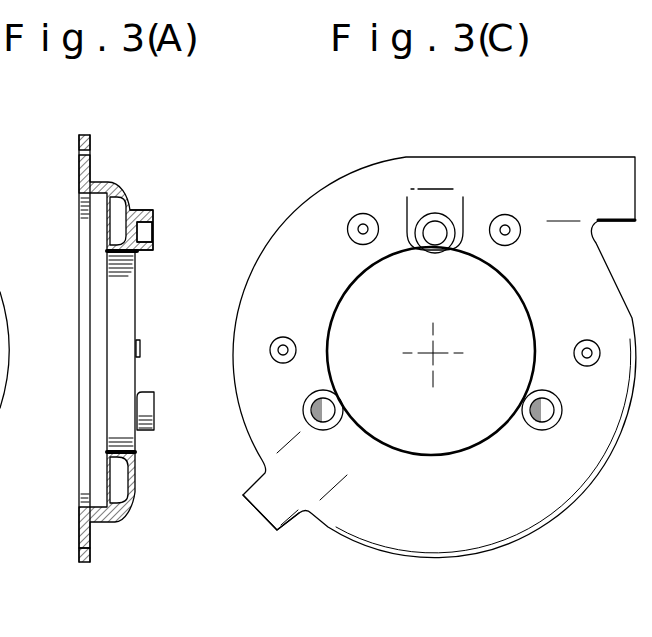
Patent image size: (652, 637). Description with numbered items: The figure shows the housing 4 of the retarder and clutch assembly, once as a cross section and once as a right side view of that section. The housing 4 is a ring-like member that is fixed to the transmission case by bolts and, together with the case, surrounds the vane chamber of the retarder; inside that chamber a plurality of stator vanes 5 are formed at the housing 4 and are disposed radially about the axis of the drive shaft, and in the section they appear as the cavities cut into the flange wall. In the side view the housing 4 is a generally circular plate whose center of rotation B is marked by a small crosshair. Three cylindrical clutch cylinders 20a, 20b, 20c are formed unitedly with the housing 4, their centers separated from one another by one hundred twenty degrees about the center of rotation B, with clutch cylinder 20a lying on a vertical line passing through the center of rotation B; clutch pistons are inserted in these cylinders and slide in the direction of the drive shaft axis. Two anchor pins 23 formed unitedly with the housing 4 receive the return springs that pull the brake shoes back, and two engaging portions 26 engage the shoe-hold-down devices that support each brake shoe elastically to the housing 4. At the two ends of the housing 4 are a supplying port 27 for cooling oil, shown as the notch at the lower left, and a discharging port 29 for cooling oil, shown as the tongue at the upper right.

In FIG. 3A, the housing 4 is at (100, 348).
In FIG. 3C, the housing 4 is at (429, 340).
In FIG. 3A, the stator vanes 5 is at (113, 218).
In FIG. 3A, the clutch cylinder 20a is at (142, 212).
In FIG. 3C, the clutch cylinder 20a is at (430, 253).
In FIG. 3A, the clutch cylinder 20b is at (194, 431).
In FIG. 3C, the clutch cylinder 20b is at (343, 411).
In FIG. 3A, the clutch cylinder 20c is at (147, 431).
In FIG. 3C, the clutch cylinder 20c is at (522, 409).
In FIG. 3C, the anchor pins 23 is at (351, 221).
In FIG. 3A, the engaging portion 26 is at (139, 343).
In FIG. 3C, the engaging portion 26 is at (270, 345).
In FIG. 3C, the supplying port 27 is at (268, 509).
In FIG. 3C, the discharging port 29 is at (607, 170).
In FIG. 3C, the center of rotation B is at (430, 357).